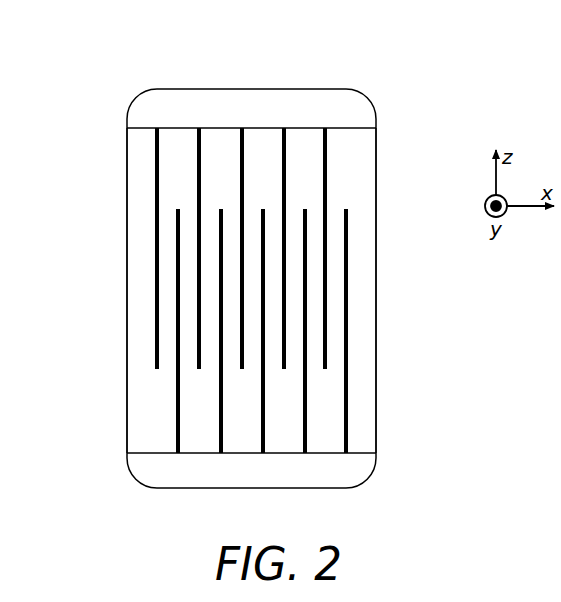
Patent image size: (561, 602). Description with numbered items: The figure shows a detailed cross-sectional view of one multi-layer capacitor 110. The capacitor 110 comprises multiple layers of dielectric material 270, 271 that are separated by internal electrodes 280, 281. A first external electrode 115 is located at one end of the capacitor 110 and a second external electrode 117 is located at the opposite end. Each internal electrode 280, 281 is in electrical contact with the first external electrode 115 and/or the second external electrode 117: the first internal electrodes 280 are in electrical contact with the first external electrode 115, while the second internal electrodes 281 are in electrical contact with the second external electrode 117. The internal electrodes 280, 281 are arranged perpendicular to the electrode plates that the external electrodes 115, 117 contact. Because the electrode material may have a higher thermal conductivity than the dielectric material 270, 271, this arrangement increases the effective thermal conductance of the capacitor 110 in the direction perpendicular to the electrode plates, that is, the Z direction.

The capacitor 110 is at (121, 72).
The second external electrode 117 is at (373, 110).
The first external electrode 115 is at (134, 475).
The second internal electrode 281 is at (325, 175).
The first internal electrode 280 is at (348, 273).
The dielectric material layer 270 is at (360, 345).
The dielectric material layer 271 is at (330, 406).